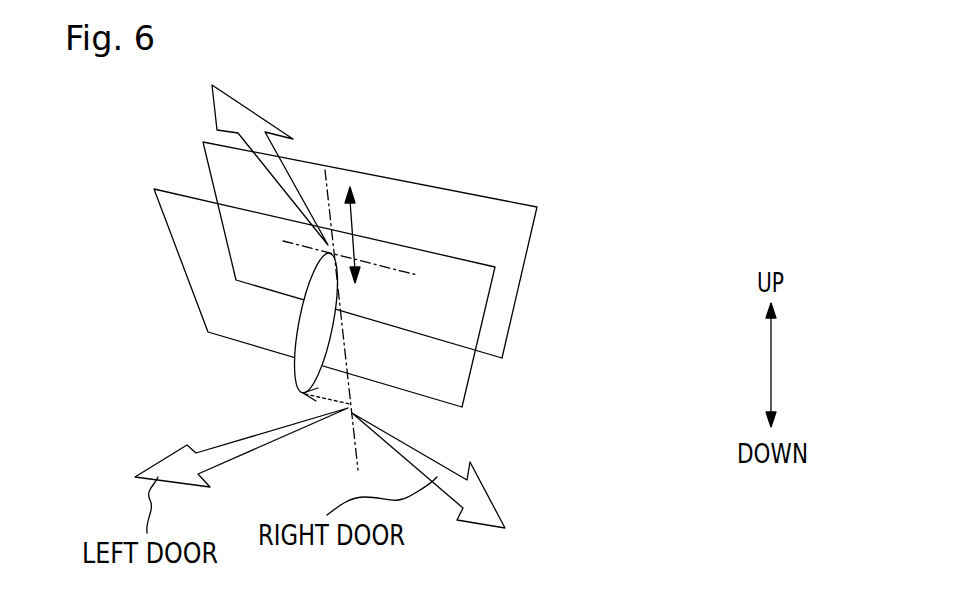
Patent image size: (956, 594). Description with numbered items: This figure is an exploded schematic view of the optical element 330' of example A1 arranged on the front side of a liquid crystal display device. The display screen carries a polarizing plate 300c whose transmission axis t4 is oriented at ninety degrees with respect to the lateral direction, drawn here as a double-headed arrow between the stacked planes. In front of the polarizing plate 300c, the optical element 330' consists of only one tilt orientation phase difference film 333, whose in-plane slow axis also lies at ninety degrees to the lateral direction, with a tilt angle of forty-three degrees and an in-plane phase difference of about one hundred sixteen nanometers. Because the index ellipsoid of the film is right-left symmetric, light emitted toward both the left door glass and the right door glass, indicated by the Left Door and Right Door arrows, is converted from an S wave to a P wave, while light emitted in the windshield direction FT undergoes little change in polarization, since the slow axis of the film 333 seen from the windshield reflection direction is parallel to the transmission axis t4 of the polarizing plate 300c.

The polarizing plate 300c is at (505, 242).
The tilt orientation phase difference film 333 is at (411, 342).
The optical element 330' is at (411, 342).
The transmission axis t4 is at (360, 207).
The front direction arrow FT is at (260, 149).